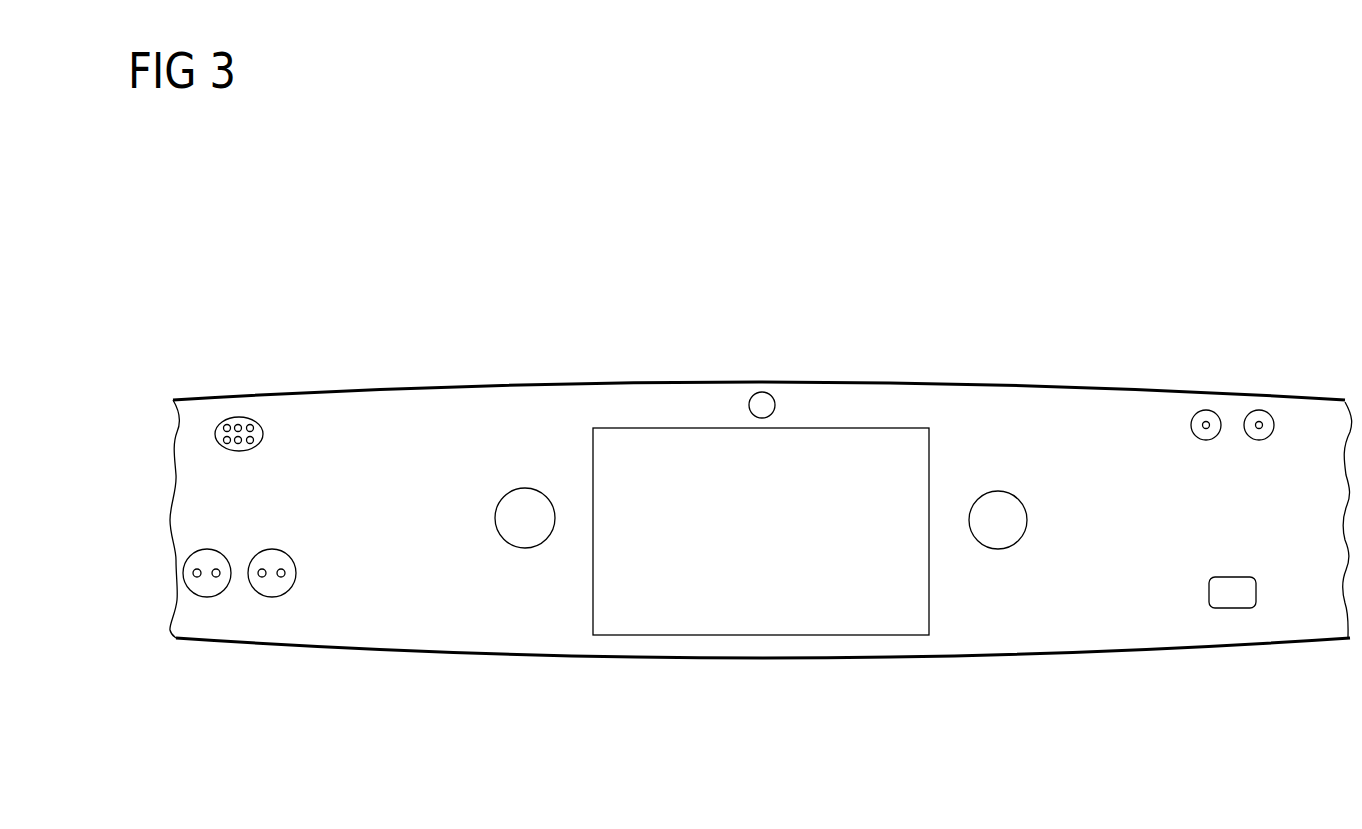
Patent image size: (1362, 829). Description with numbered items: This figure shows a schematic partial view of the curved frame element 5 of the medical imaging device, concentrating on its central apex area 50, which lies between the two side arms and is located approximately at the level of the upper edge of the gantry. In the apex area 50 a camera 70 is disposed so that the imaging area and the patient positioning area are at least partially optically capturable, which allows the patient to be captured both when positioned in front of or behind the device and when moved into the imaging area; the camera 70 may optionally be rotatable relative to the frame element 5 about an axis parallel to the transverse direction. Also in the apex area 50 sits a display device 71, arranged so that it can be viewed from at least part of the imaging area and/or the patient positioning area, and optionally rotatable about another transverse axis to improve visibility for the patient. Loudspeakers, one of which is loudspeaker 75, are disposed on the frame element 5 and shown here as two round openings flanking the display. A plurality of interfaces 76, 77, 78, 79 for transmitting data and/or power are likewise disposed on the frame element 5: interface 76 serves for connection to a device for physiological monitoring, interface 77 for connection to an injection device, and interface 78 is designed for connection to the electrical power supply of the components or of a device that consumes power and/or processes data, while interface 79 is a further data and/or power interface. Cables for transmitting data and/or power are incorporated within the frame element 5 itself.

The frame element 5 is at (572, 402).
The apex area 50 is at (764, 650).
The camera 70 is at (760, 398).
The display device 71 is at (882, 450).
The loudspeaker 75 is at (523, 540).
The interface 76 is at (238, 418).
The interface 77 is at (1233, 608).
The interface 78 is at (204, 590).
The interface 79 is at (1205, 410).